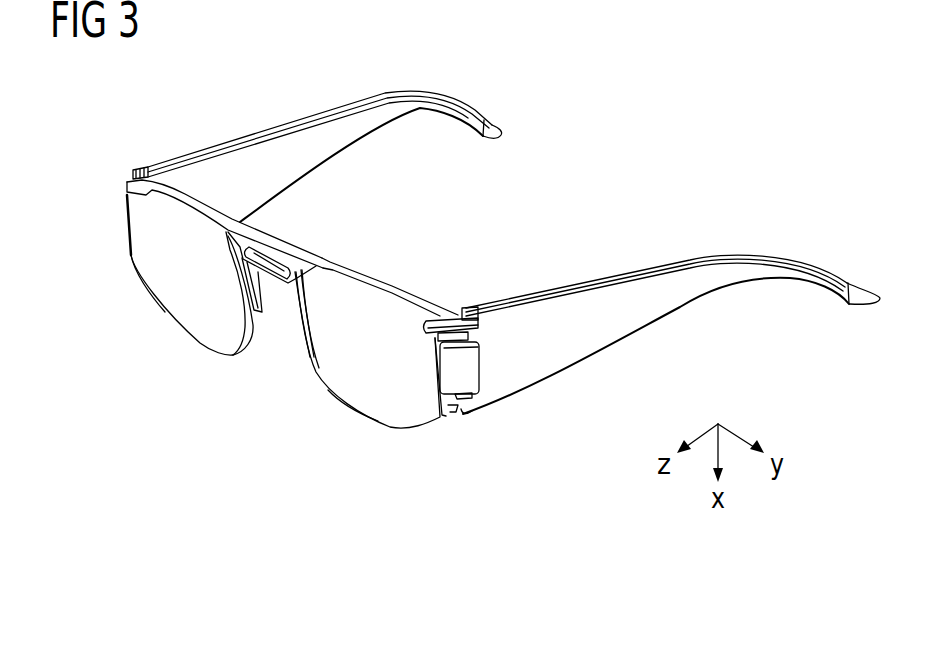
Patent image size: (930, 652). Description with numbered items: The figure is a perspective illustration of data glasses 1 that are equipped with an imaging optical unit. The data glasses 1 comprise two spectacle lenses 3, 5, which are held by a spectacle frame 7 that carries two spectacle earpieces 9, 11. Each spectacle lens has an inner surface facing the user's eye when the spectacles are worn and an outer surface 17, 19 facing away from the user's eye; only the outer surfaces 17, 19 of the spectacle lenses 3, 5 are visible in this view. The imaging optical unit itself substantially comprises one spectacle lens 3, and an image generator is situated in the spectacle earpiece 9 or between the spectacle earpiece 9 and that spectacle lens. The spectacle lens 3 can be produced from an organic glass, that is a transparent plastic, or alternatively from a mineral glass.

The data glasses 1 is at (550, 98).
The spectacle lens 3 is at (166, 324).
The spectacle lens 5 is at (279, 365).
The spectacle frame 7 is at (296, 246).
The spectacle earpiece 9 is at (261, 148).
The spectacle earpiece 11 is at (537, 300).
The outer surface 17 is at (148, 279).
The outer surface 19 is at (356, 403).